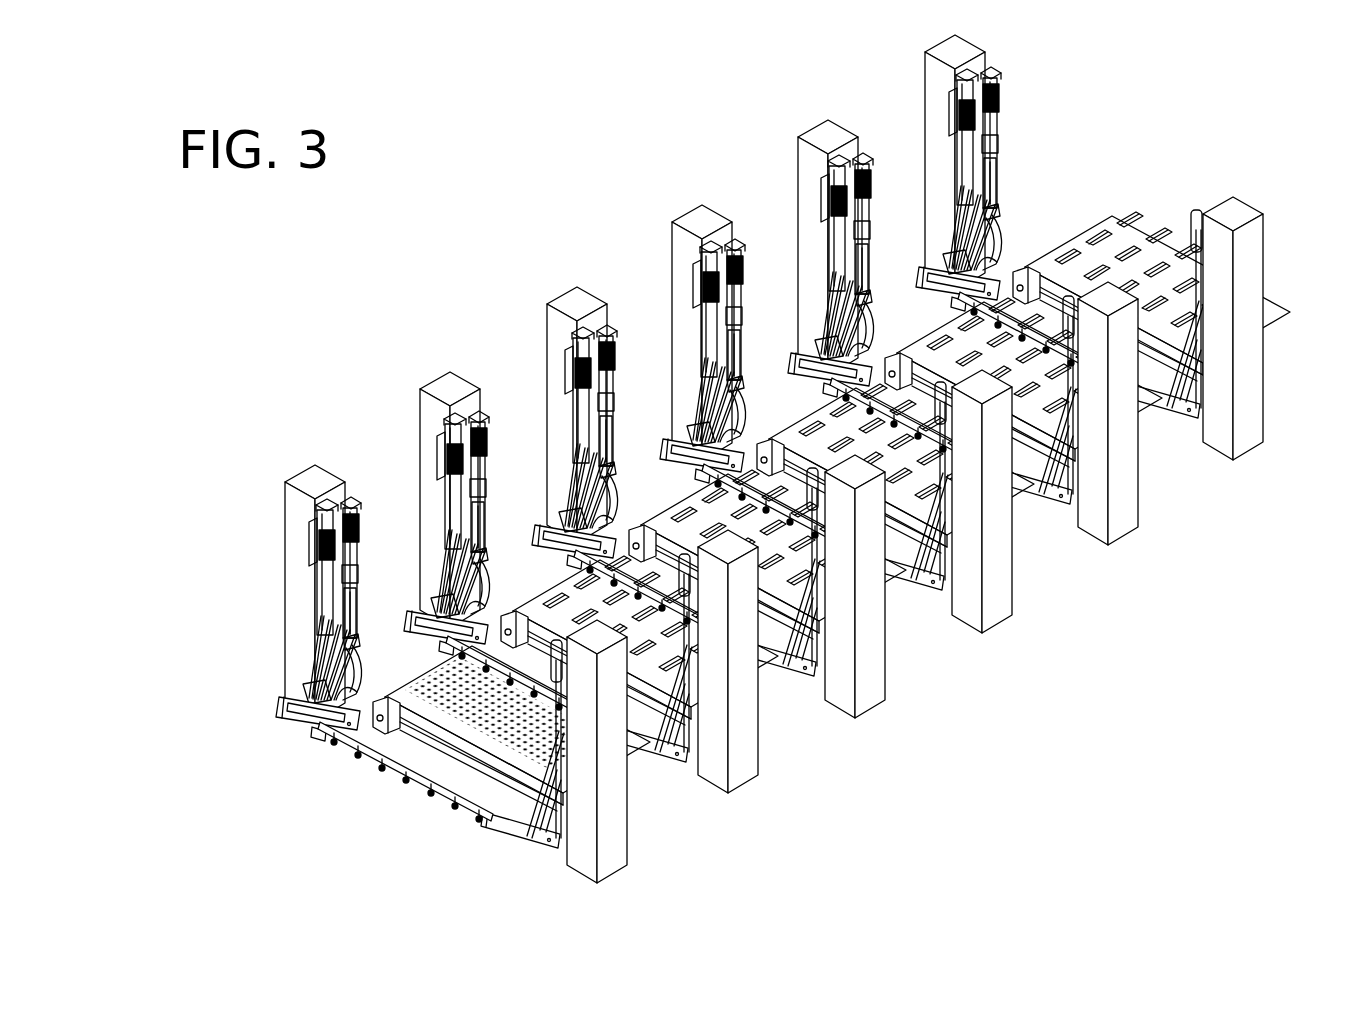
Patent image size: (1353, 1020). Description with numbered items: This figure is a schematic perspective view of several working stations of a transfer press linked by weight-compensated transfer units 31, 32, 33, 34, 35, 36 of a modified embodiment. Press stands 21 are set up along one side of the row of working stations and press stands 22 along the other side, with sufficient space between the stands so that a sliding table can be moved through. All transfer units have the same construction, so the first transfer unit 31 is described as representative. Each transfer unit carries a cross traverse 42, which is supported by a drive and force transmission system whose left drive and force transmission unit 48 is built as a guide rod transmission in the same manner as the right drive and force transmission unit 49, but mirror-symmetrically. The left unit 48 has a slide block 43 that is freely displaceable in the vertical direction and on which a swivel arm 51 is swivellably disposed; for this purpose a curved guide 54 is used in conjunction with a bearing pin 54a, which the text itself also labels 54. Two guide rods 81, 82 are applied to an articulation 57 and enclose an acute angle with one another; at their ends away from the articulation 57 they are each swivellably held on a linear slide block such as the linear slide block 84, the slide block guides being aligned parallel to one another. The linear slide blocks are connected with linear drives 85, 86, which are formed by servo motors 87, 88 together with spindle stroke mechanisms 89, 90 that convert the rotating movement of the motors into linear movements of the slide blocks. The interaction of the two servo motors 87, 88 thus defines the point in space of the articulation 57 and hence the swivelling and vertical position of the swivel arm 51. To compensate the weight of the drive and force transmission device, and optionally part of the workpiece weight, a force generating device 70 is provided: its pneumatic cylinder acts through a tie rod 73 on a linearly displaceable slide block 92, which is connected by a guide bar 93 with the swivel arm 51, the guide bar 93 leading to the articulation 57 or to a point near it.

The press stand 21 is at (950, 58).
The press stand 22 is at (608, 860).
The first transfer unit 31 is at (408, 625).
The transfer unit 32 is at (504, 591).
The transfer unit 33 is at (630, 504).
The transfer unit 34 is at (752, 422).
The transfer unit 35 is at (882, 337).
The transfer unit 36 is at (1012, 288).
The cross traverse 42 is at (380, 765).
The slide block 43 is at (353, 678).
The left drive and force transmission unit 48 is at (291, 603).
The right drive and force transmission unit 49 is at (503, 797).
The swivel arm 51 is at (280, 703).
The curved guide 54 is at (353, 698).
The rail mount 54a is at (316, 738).
The articulation 57 is at (307, 707).
The force generating device 70 is at (356, 480).
The tie rod 73 is at (352, 590).
The guide rod 81 is at (315, 686).
The guide rod 82 is at (306, 655).
The linear slide block 84 is at (352, 642).
The linear drive 85 is at (305, 524).
The linear drive 86 is at (372, 511).
The servo motor 87 is at (323, 500).
The servo motor 88 is at (357, 503).
The spindle stroke mechanism 89 is at (317, 577).
The spindle stroke mechanism 90 is at (352, 573).
The slide block 92 is at (316, 618).
The guide bar 93 is at (310, 630).